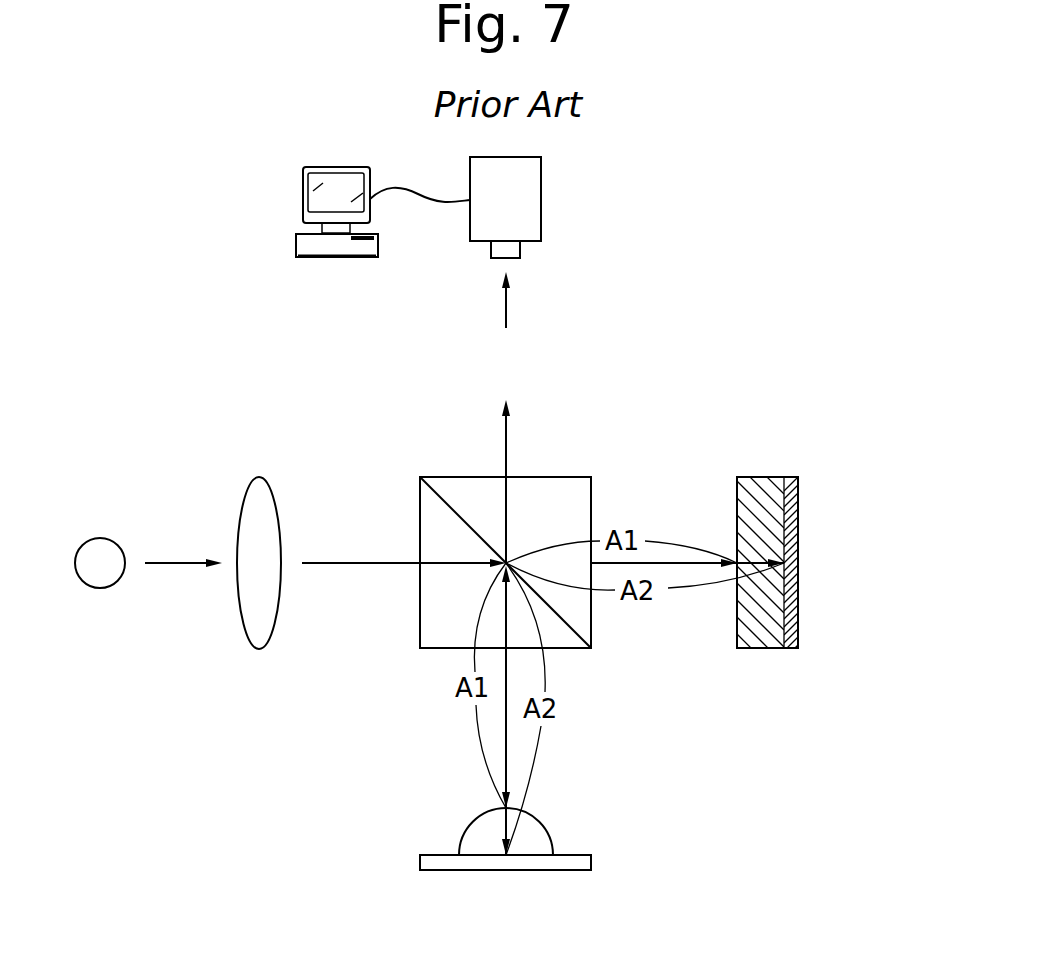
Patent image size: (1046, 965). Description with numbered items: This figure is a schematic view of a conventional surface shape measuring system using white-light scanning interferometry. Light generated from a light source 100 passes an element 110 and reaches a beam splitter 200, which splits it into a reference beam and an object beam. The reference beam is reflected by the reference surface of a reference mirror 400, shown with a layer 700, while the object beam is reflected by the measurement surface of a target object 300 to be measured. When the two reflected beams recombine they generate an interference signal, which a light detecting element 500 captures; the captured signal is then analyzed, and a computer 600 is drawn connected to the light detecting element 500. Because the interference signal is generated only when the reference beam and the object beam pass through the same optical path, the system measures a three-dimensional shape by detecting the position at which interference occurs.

The light source 100 is at (98, 588).
The collimating lens 110 is at (255, 644).
The beam splitter 200 is at (420, 630).
The target object 300 is at (555, 870).
The reference mirror 400 is at (798, 590).
The light detecting element 500 is at (541, 200).
The computer 600 is at (308, 257).
The reflective coating layer 700 is at (763, 640).